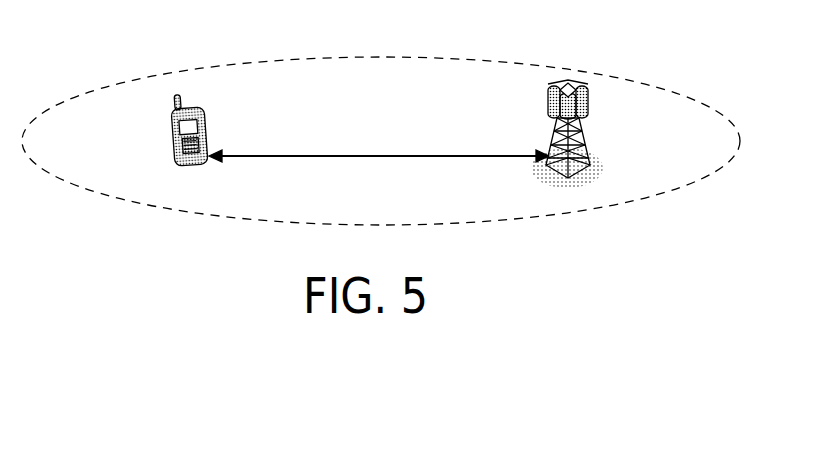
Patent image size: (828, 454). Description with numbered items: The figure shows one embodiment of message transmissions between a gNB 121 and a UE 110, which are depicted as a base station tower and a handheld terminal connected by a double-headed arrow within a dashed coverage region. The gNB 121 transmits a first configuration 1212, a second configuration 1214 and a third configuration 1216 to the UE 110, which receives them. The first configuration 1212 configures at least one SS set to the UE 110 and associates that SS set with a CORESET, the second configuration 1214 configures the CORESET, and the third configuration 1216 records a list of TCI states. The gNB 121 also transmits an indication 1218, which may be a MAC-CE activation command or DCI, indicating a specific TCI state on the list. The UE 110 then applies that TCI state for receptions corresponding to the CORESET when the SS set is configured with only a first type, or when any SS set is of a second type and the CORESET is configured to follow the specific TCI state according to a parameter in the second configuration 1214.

The UE 110 is at (173, 120).
The gNB 121 is at (587, 118).
The first configuration 1212 is at (379, 119).
The second configuration 1214 is at (368, 155).
The third configuration 1216 is at (379, 116).
The indication 1218 is at (379, 116).